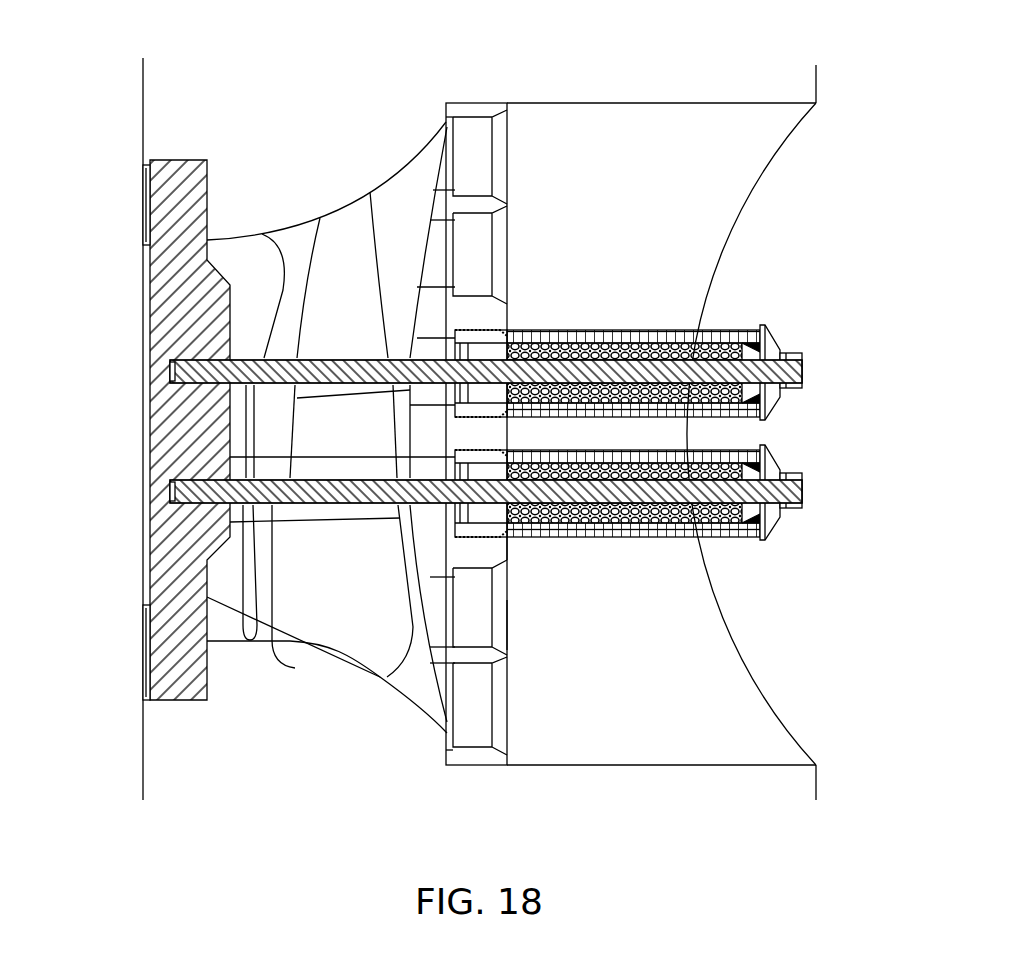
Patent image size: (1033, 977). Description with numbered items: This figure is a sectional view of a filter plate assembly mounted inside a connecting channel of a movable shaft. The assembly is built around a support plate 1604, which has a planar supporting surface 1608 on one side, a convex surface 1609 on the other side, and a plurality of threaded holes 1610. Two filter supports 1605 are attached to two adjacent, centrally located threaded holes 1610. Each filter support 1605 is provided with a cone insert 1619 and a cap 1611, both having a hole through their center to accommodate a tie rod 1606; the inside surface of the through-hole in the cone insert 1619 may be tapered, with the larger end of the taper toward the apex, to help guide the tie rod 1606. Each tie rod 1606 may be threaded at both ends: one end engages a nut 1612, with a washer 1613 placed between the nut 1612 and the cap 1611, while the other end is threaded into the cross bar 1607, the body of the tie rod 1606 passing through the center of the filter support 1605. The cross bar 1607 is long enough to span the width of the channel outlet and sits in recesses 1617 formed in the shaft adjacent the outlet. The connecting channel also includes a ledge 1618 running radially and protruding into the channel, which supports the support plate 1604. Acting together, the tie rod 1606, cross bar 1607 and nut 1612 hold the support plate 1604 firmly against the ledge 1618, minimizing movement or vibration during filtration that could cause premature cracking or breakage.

The support plate 1604 is at (480, 108).
The filter support 1605 is at (660, 332).
The tie rod 1606 is at (338, 352).
The cross bar 1607 is at (150, 462).
The planar supporting surface 1608 is at (509, 546).
The convex surface 1609 is at (410, 436).
The threaded hole 1610 is at (509, 621).
The cap 1611 is at (775, 340).
The nut 1612 is at (800, 472).
The washer 1613 is at (780, 395).
The recess 1617 is at (150, 200).
The ledge 1618 is at (446, 117).
The cone insert 1619 is at (740, 332).